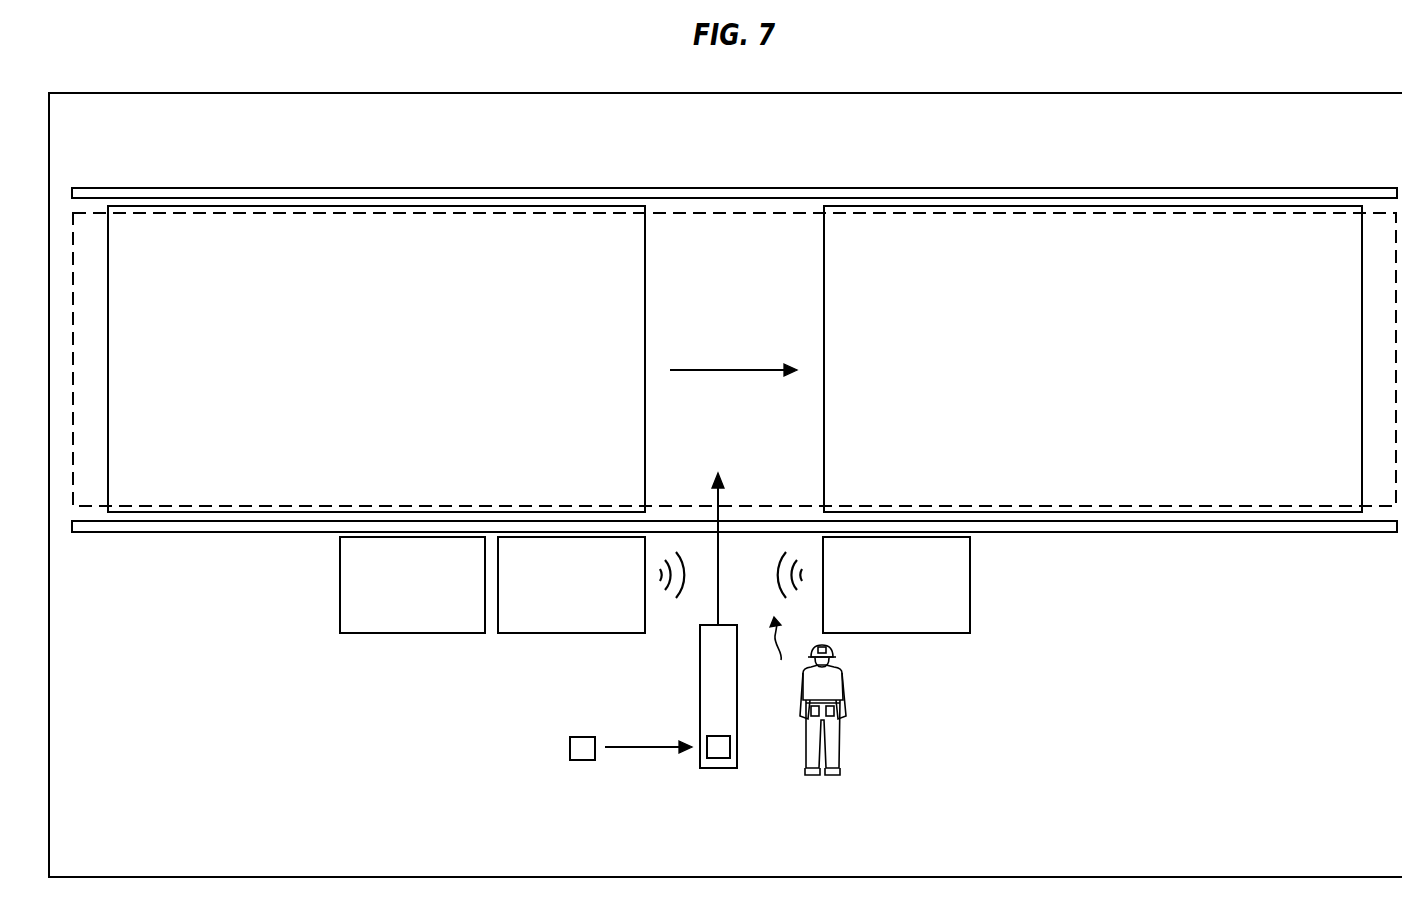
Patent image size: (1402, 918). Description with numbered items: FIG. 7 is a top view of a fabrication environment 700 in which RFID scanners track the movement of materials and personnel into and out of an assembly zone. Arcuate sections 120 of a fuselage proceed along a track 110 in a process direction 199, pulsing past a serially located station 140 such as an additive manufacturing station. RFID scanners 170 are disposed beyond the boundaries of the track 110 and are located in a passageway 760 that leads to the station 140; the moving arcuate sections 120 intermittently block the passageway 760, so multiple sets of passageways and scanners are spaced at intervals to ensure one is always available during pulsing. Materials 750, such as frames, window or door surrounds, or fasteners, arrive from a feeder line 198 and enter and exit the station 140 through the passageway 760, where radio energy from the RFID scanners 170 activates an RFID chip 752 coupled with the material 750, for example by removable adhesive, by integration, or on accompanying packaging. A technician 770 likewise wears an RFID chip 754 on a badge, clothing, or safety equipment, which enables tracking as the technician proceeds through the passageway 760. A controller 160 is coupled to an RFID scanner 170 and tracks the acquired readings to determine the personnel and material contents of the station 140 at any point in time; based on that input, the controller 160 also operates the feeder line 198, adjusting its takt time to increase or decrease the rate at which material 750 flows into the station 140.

The track 110 is at (350, 188).
The arcuate section 120 is at (108, 368).
The station 140 is at (750, 213).
The process direction 199 is at (735, 370).
The controller 160 is at (394, 608).
The RFID scanner 170 is at (553, 608).
The feeder line 198 is at (570, 745).
The fabrication environment 700 is at (717, 866).
The material 750 is at (700, 698).
The RFID chip 752 is at (730, 747).
The RFID chip 754 is at (845, 726).
The passageway 760 is at (780, 649).
The technician 770 is at (843, 680).